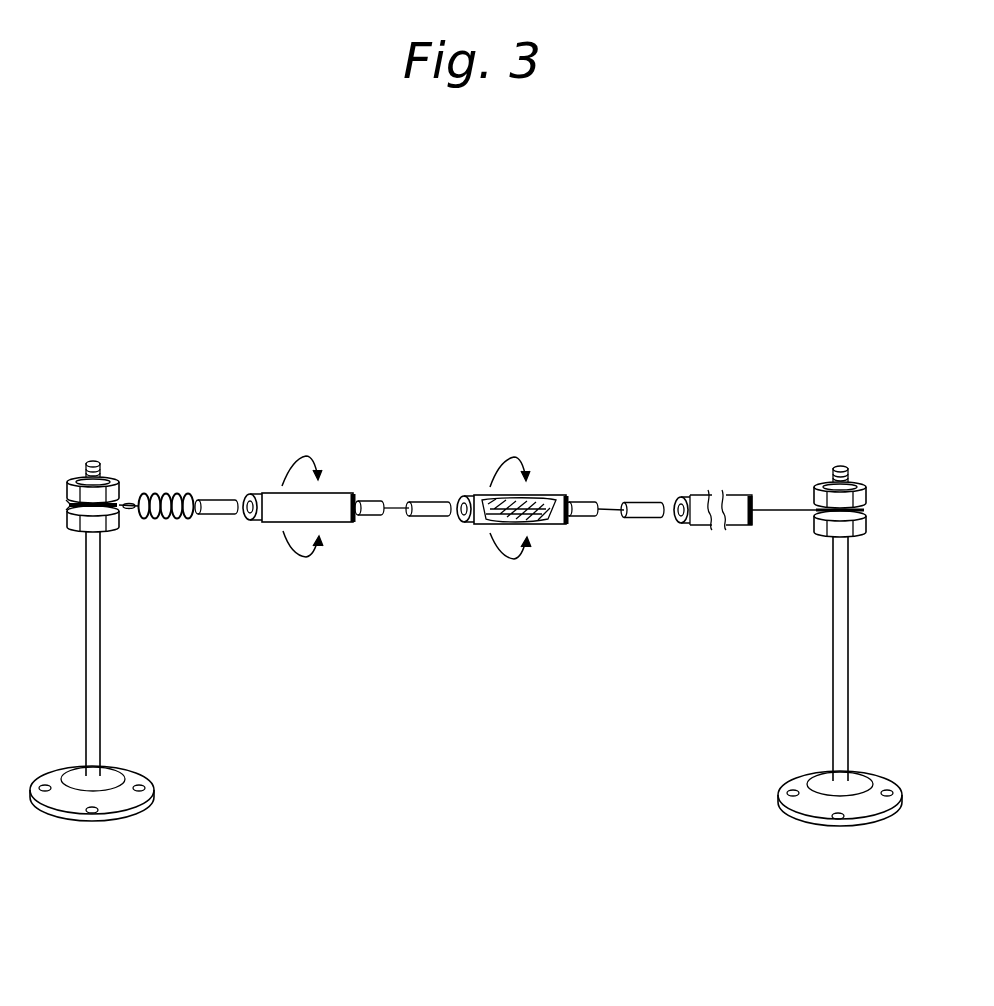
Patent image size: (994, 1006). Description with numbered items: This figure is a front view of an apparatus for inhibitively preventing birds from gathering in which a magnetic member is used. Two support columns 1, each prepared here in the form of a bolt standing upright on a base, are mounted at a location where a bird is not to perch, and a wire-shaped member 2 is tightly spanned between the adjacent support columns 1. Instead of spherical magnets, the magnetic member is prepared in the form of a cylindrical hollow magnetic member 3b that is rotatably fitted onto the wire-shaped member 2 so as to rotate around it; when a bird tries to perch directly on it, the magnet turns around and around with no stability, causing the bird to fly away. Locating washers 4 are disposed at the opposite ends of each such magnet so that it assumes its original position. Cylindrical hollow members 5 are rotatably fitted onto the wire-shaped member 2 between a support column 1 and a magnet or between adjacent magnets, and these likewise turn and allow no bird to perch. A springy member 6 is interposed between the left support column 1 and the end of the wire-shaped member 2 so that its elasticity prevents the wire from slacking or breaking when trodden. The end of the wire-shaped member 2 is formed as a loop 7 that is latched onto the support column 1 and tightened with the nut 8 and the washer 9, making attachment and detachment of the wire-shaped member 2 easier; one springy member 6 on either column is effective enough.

The support column 1 is at (94, 644).
The wire-shaped member 2 is at (396, 506).
The cylindrical hollow magnetic member 3b is at (320, 497).
The locating washer 4 is at (254, 495).
The cylindrical hollow member 5 is at (224, 500).
The springy member 6 is at (172, 495).
The loop 7 is at (120, 507).
The nut 8 is at (104, 482).
The washer 9 is at (66, 501).